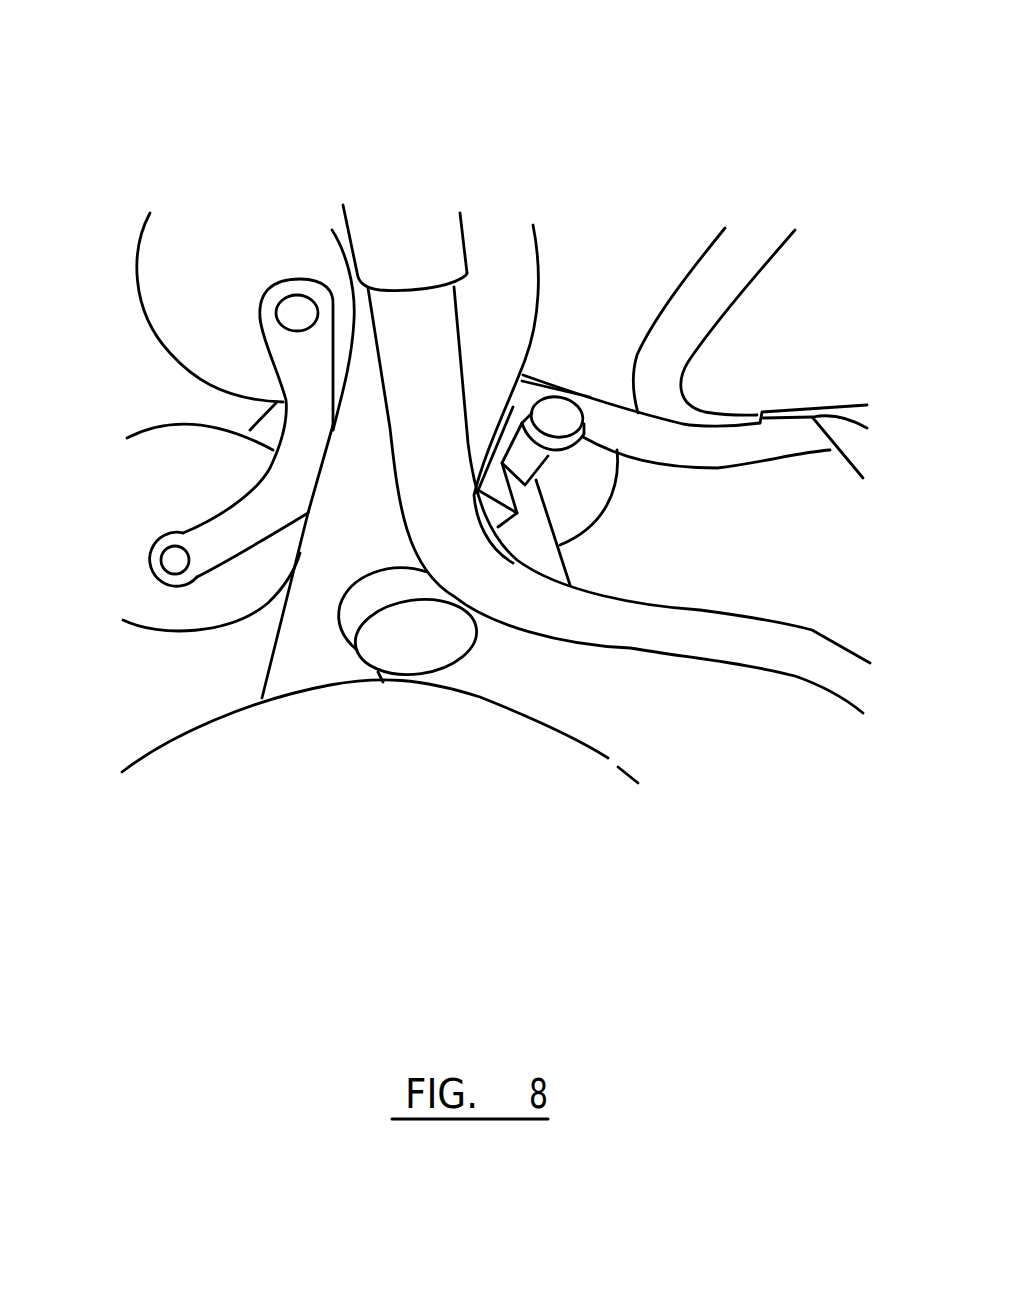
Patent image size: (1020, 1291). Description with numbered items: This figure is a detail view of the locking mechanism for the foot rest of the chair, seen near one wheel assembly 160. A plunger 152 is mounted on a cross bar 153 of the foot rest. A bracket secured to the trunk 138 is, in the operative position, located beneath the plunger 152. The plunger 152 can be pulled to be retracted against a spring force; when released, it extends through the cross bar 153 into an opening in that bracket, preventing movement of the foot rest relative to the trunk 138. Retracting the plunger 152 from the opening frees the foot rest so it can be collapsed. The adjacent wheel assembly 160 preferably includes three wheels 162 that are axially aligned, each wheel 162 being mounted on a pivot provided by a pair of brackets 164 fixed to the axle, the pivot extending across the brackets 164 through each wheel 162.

The trunk 138 is at (313, 660).
The plunger 152 is at (557, 410).
The cross bar 153 is at (537, 563).
The wheel assembly 160 is at (178, 406).
The wheel 162 is at (213, 275).
The bracket 164 is at (263, 427).